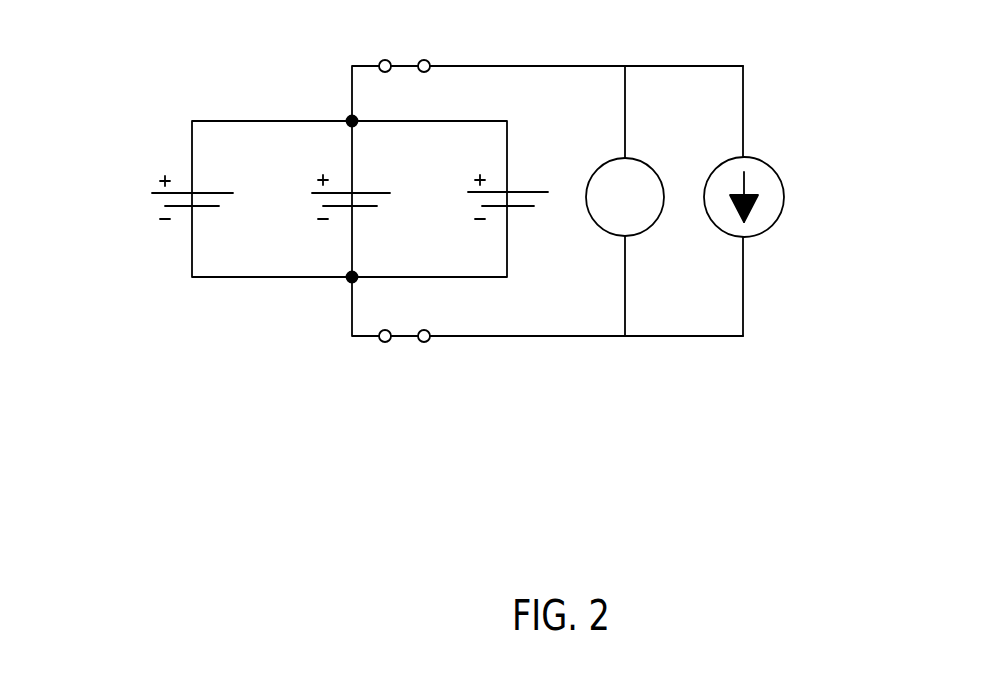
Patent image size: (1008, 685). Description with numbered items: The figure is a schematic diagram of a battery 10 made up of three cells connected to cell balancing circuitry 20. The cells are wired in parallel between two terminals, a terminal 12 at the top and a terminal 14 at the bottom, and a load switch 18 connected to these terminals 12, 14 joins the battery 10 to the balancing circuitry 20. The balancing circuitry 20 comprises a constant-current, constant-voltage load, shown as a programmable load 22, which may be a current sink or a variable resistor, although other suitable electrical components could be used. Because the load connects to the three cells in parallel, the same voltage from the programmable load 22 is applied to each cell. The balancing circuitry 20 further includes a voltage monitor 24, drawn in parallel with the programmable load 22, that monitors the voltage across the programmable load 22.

The battery 10 is at (97, 95).
The terminal 12 is at (380, 62).
The terminal 14 is at (378, 342).
The load switch 18 is at (397, 62).
The balancing circuitry 20 is at (788, 23).
The programmable load 22 is at (770, 165).
The voltage monitor 24 is at (639, 159).